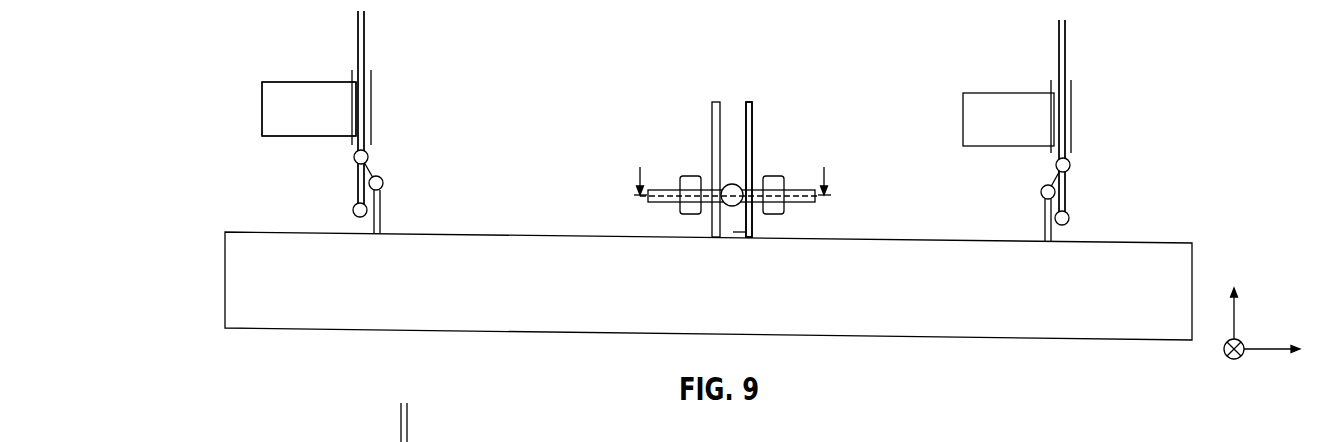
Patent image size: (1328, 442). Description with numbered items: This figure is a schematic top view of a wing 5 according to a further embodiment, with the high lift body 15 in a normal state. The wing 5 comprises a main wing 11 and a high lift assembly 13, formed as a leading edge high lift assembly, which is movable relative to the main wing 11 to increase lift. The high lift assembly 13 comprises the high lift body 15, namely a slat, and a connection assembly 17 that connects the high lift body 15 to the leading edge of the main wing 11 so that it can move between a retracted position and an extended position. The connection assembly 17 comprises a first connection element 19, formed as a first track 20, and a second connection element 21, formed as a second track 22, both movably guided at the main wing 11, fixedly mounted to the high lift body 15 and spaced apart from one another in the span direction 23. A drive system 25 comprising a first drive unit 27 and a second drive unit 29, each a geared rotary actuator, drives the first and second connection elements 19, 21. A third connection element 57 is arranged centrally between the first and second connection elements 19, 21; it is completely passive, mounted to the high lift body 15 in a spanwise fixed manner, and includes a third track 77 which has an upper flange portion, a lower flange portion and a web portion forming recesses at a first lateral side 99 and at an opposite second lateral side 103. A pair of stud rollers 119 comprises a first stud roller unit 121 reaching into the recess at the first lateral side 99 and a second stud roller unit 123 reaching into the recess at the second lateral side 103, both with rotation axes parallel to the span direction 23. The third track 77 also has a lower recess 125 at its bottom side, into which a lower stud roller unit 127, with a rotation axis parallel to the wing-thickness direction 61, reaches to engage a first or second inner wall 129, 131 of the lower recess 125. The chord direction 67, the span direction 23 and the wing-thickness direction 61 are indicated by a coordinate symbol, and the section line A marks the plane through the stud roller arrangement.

The wing 5 is at (147, 116).
The main wing 11 is at (908, 143).
The high lift assembly 13 is at (1236, 227).
The high lift body 15 is at (821, 298).
The connection assembly 17 is at (1236, 141).
The first connection element 19 is at (1066, 58).
The first track 20 is at (1062, 116).
The second connection element 21 is at (363, 40).
The second track 22 is at (361, 108).
The span direction 23 is at (1275, 352).
The drive system 25 is at (278, 93).
The first drive unit 27 is at (980, 100).
The second drive unit 29 is at (309, 109).
The third connection element 57 is at (753, 125).
The third track 77 is at (749, 169).
The wing-thickness direction 61 is at (1236, 360).
The chord direction 67 is at (1236, 320).
The first lateral side 99 is at (1168, 143).
The second lateral side 103 is at (256, 182).
The pair of stud rollers 119 is at (692, 128).
The first stud roller unit 121 is at (775, 182).
The second stud roller unit 123 is at (693, 178).
The lower recess 125 is at (733, 232).
The lower stud roller unit 127 is at (733, 184).
The first inner wall 129 is at (747, 114).
The second inner wall 131 is at (720, 115).
The section line A is at (732, 167).